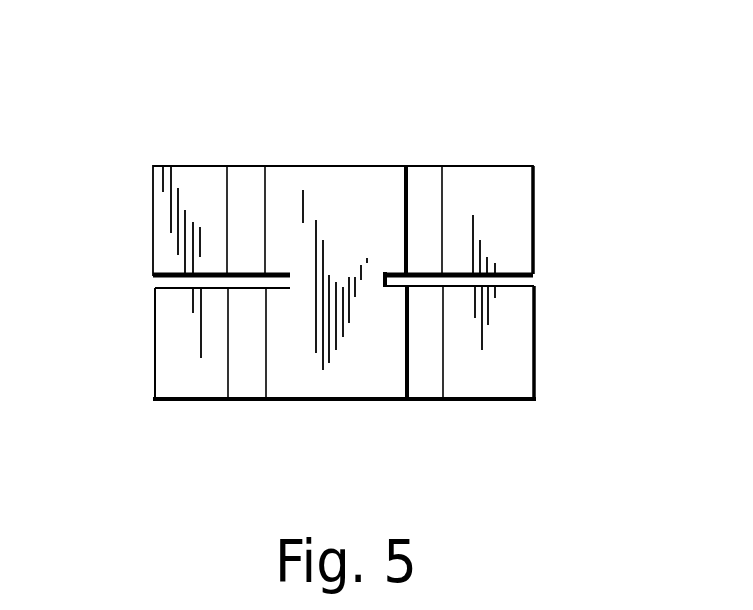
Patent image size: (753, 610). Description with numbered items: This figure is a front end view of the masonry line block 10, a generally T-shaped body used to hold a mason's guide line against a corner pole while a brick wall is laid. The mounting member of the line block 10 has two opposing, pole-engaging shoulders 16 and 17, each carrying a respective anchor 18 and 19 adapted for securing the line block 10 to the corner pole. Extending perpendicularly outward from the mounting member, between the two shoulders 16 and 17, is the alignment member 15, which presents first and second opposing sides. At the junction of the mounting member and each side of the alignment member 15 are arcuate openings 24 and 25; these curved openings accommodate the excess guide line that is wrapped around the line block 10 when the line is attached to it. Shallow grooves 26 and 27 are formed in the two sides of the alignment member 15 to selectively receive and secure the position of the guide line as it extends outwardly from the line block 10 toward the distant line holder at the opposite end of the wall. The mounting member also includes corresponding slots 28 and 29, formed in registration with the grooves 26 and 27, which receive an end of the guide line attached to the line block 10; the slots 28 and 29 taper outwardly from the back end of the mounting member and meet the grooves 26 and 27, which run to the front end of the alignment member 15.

The line block 10 is at (88, 160).
The alignment member 15 is at (362, 190).
The pole-engaging shoulder 16 is at (537, 329).
The pole-engaging shoulder 17 is at (153, 342).
The anchor 18 is at (517, 177).
The anchor 19 is at (190, 372).
The arcuate opening 24 is at (420, 377).
The arcuate opening 25 is at (248, 187).
The shallow groove 26 is at (394, 281).
The shallow groove 27 is at (279, 289).
The slot 28 is at (510, 280).
The slot 29 is at (163, 282).